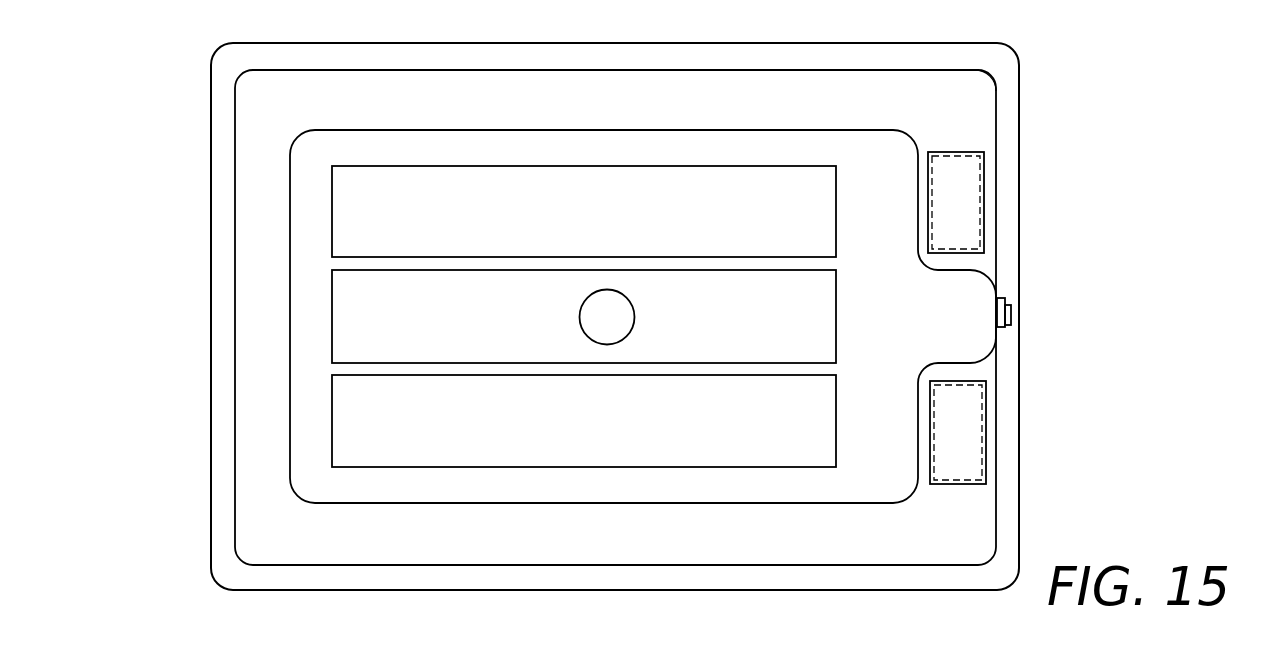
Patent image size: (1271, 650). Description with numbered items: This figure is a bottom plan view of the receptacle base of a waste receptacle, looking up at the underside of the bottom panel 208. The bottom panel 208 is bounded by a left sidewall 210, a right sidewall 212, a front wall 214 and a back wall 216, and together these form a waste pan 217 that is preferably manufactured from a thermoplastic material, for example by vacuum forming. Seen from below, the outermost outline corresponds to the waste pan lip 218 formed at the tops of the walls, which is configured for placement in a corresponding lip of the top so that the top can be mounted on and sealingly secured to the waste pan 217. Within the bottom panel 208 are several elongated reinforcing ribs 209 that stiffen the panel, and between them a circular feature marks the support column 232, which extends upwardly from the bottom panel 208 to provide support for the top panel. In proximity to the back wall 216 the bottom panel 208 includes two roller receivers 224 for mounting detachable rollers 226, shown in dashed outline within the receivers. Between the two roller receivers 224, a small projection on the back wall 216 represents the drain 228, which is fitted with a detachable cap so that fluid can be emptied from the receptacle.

The bottom panel 208 is at (583, 113).
The reinforcing ribs 209 is at (467, 363).
The left sidewall 210 is at (477, 567).
The right sidewall 212 is at (466, 70).
The front wall 214 is at (235, 522).
The back wall 216 is at (996, 122).
The waste pan 217 is at (993, 78).
The waste pan lip 218 is at (1020, 197).
The roller receivers 224 is at (957, 382).
The detachable rollers 226 is at (984, 440).
The drain 228 is at (1011, 318).
The support column 232 is at (583, 304).